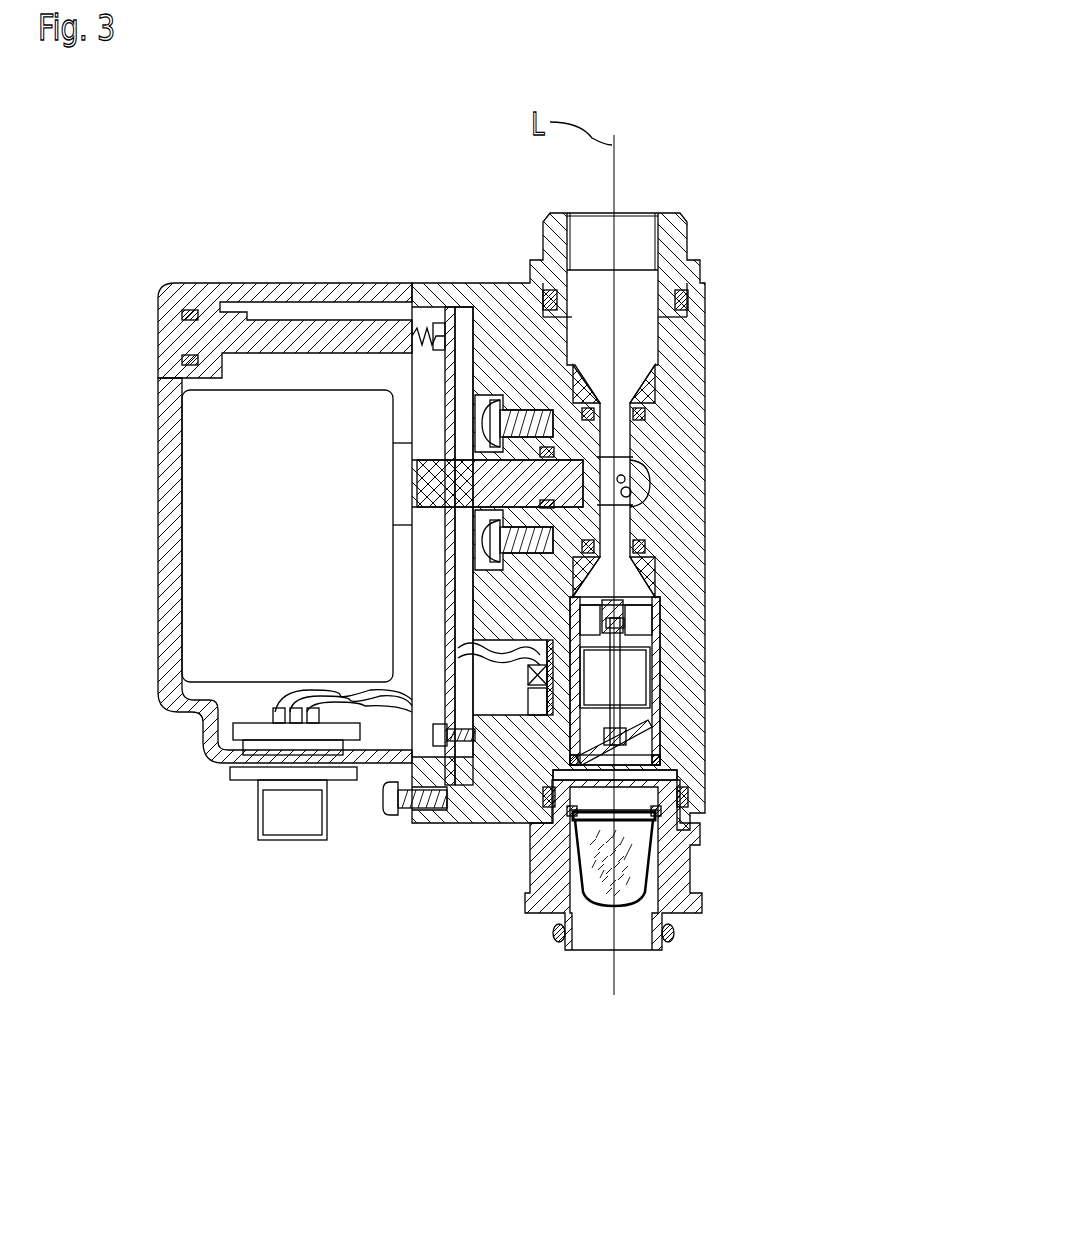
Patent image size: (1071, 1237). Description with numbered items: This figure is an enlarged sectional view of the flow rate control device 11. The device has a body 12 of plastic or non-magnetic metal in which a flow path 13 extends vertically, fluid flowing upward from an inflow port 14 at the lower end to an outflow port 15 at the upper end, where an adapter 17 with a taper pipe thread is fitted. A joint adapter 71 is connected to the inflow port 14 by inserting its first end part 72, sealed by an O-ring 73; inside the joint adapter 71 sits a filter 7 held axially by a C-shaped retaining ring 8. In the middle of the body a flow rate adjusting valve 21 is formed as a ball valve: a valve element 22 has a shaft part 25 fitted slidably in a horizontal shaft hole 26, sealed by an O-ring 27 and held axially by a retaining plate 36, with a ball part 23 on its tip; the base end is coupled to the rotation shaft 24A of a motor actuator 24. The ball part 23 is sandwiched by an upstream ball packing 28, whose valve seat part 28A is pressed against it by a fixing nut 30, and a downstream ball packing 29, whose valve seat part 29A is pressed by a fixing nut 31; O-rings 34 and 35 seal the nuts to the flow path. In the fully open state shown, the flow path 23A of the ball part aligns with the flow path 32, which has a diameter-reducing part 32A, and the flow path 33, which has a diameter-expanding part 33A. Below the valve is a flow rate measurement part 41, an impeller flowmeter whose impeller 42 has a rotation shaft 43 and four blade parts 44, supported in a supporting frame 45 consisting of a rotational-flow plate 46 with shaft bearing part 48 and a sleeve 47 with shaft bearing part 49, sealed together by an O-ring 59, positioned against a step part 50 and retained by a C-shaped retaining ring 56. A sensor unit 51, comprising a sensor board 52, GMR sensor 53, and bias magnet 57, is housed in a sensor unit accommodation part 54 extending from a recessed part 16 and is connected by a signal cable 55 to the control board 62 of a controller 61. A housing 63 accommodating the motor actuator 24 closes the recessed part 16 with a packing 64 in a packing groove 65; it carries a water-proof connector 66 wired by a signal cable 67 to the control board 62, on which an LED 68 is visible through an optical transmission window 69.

The filter 7 is at (604, 882).
The C-shaped retaining ring 8 is at (690, 862).
The flow rate control device 11 is at (682, 140).
The body 12 is at (488, 276).
The flow path 13 is at (663, 356).
The inflow port 14 is at (705, 832).
The outflow port 15 is at (695, 272).
The recessed part 16 is at (385, 770).
The adapter 17 is at (683, 248).
The flow rate adjusting valve 21 is at (652, 463).
The valve element 22 is at (465, 552).
The ball part 23 is at (642, 481).
The flow path of the ball part 23A is at (641, 492).
The motor actuator 24 is at (232, 423).
The rotation shaft 24A is at (403, 468).
The shaft part 25 is at (413, 489).
The shaft hole 26 is at (432, 508).
The O-ring 27 is at (413, 503).
The ball packing 28 is at (648, 552).
The valve seat part 28A is at (642, 530).
The ball packing 29 is at (650, 434).
The valve seat part 29A is at (648, 451).
The fixing nut 30 is at (664, 606).
The fixing nut 31 is at (648, 409).
The flow path 32 is at (648, 510).
The diameter-reducing part 32A is at (656, 598).
The flow path 33 is at (605, 400).
The diameter-expanding part 33A is at (690, 300).
The O-ring 34 is at (648, 567).
The O-ring 35 is at (706, 426).
The retaining plate 36 is at (464, 335).
The flow rate measurement part 41 is at (648, 738).
The impeller 42 is at (669, 711).
The rotation shaft 43 is at (661, 649).
The blade parts 44 is at (652, 690).
The supporting frame 45 is at (656, 662).
The rotational-flow plate 46 is at (665, 770).
The sleeve 47 is at (655, 683).
The shaft bearing part 48 is at (645, 754).
The shaft bearing part 49 is at (652, 640).
The step part 50 is at (626, 616).
The sensor unit 51 is at (547, 676).
The sensor board 52 is at (547, 700).
The GMR sensor 53 is at (470, 740).
The sensor unit accommodation part 54 is at (450, 768).
The signal cable 55 is at (522, 675).
The C-shaped retaining ring 56 is at (680, 782).
The bias magnet 57 is at (462, 800).
The O-ring 59 is at (660, 762).
The controller 61 is at (433, 405).
The control board 62 is at (443, 595).
The housing 63 is at (213, 281).
The packing 64 is at (449, 312).
The packing groove 65 is at (395, 814).
The water-proof connector 66 is at (237, 793).
The signal cable 67 is at (318, 782).
The LED 68 is at (430, 335).
The optical transmission window 69 is at (157, 335).
The joint adapter 71 is at (660, 957).
The first end part 72 is at (548, 800).
The O-ring 73 is at (688, 802).